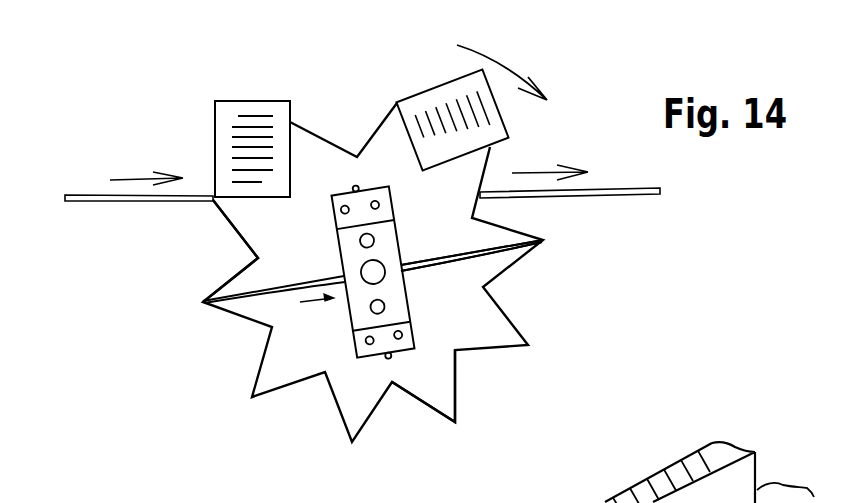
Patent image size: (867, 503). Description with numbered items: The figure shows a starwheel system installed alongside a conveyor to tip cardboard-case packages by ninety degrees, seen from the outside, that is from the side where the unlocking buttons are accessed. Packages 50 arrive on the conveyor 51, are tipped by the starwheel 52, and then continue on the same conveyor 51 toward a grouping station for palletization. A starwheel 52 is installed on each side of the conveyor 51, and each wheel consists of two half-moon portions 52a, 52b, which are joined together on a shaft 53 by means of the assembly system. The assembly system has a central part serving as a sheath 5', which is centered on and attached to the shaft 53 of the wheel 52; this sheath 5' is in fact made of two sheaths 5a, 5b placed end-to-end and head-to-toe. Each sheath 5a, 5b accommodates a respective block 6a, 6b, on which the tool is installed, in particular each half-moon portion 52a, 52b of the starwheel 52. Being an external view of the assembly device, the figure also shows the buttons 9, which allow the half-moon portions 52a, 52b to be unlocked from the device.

The packages 50 is at (421, 103).
The conveyor 51 is at (88, 196).
The starwheel 52 is at (427, 415).
The half-moon portion 52a is at (268, 227).
The half-moon portion 52b is at (433, 378).
The sheath 5' is at (370, 289).
The sheath 5a is at (389, 234).
The sheath 5b is at (386, 307).
The block 6a is at (362, 213).
The block 6b is at (373, 350).
The buttons 9 is at (367, 240).
The shaft 53 is at (381, 277).